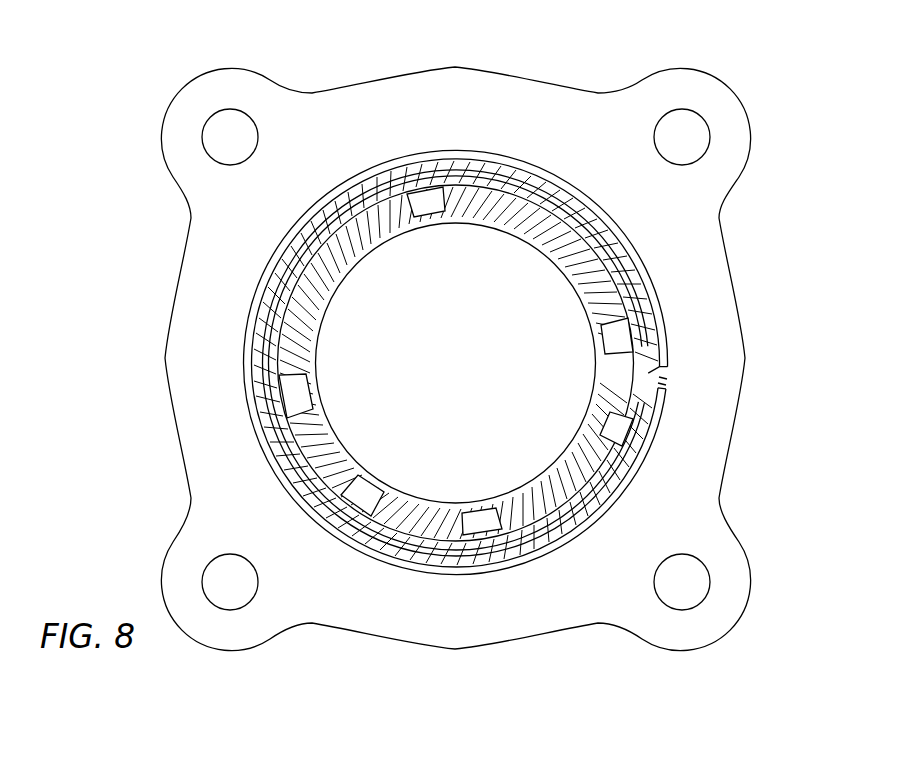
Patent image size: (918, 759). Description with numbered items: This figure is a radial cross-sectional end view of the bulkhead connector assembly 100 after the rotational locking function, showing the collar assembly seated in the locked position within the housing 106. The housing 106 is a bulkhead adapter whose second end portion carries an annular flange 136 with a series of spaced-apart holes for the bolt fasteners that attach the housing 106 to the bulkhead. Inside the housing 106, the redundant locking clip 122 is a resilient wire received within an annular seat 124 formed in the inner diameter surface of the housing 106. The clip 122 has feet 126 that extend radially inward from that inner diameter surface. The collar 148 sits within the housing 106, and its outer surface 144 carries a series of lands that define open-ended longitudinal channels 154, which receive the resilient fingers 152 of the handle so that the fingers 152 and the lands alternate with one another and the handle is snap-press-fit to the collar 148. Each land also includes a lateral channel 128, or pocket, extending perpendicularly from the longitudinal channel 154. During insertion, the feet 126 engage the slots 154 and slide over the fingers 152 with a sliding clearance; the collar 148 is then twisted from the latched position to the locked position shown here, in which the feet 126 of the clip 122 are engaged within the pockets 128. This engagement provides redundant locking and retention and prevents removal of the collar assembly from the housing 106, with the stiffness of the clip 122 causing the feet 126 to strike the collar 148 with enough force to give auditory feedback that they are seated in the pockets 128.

The bulkhead connector assembly 100 is at (130, 94).
The housing 106 is at (165, 355).
The annular flange 136 is at (733, 90).
The redundant locking clip 122 is at (650, 296).
The longitudinal channels 154 is at (670, 343).
The outer surface 144 is at (467, 170).
The annular seat 124 is at (437, 152).
The collar 148 is at (315, 342).
The resilient fingers 152 is at (425, 207).
The lateral channels 128 is at (500, 170).
The feet 126 is at (353, 207).